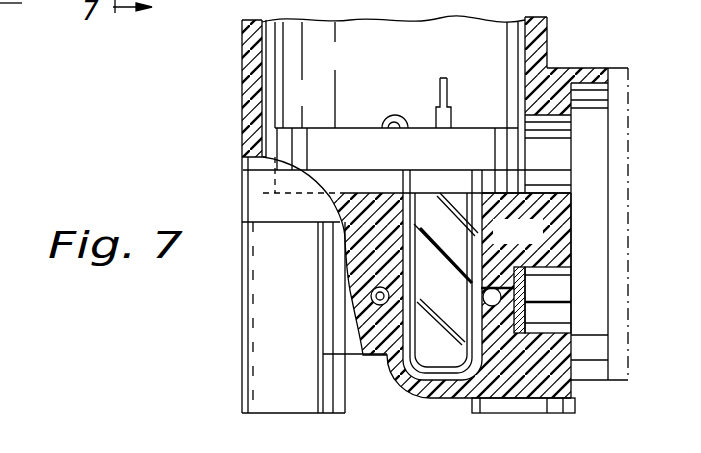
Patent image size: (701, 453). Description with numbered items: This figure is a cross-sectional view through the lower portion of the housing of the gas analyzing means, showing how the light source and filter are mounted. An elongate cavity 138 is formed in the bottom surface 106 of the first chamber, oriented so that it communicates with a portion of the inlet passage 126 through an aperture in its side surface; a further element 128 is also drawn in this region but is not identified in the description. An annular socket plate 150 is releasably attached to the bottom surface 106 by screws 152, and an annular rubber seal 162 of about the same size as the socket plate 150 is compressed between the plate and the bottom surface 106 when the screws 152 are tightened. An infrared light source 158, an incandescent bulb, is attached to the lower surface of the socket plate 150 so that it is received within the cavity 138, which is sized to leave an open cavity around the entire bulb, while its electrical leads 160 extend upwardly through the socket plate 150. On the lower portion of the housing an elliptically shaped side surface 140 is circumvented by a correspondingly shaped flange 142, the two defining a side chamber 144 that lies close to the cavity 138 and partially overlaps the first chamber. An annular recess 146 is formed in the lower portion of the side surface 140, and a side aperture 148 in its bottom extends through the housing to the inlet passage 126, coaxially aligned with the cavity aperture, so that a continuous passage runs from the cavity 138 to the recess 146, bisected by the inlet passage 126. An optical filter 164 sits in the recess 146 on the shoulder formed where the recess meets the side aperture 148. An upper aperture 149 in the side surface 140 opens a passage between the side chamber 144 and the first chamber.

The bottom surface 106 is at (362, 192).
The inlet passage 126 is at (492, 312).
The pivot pin 128 is at (374, 297).
The elongate cavity 138 is at (452, 382).
The side surface 140 is at (575, 100).
The flange 142 is at (597, 68).
The side chamber 144 is at (598, 210).
The annular recess 146 is at (525, 283).
The side aperture 148 is at (500, 280).
The upper aperture 149 is at (548, 122).
The annular socket plate 150 is at (322, 135).
The screws 152 is at (393, 117).
The infrared light source 158 is at (431, 348).
The electrical leads 160 is at (446, 108).
The annular rubber seal 162 is at (407, 177).
The optical filter 164 is at (525, 305).